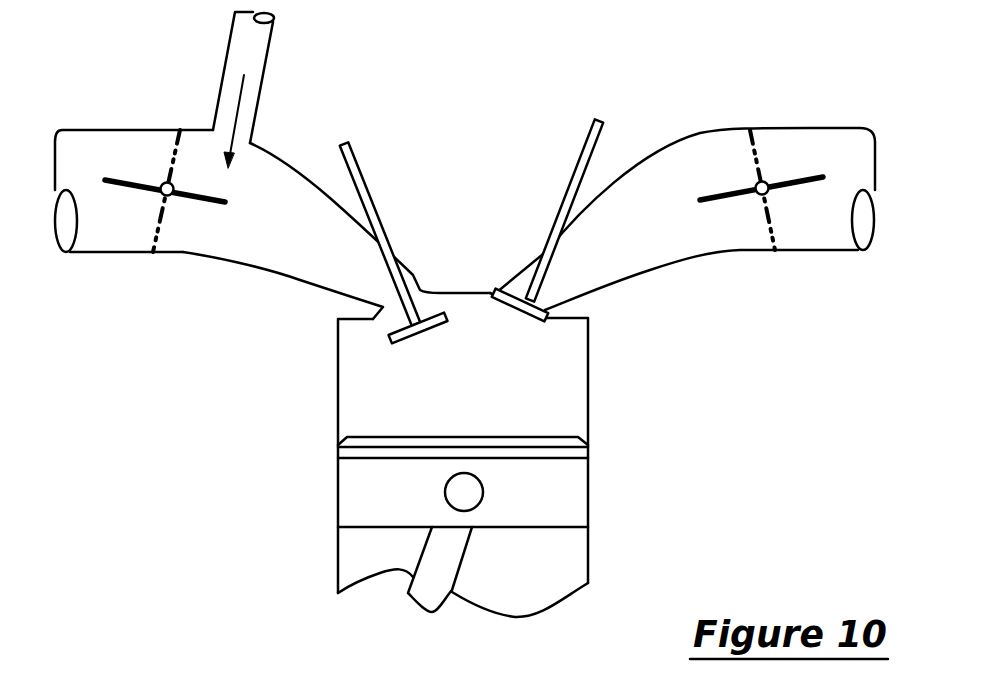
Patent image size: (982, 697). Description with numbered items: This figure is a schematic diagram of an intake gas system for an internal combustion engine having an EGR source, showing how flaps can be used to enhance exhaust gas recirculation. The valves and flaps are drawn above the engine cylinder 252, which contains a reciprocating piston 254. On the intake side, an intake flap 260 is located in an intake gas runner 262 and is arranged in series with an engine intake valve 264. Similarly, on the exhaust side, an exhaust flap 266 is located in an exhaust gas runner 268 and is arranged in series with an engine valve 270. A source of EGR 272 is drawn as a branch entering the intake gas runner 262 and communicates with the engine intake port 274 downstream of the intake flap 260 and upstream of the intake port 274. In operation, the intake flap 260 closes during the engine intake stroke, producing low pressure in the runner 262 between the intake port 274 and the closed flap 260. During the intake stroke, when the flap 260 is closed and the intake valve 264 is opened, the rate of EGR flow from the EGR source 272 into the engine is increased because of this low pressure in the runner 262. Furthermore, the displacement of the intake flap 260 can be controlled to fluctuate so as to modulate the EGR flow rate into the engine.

The engine cylinder 252 is at (588, 370).
The reciprocating piston 254 is at (588, 492).
The intake flap 260 is at (133, 184).
The intake gas runner 262 is at (82, 142).
The engine intake valve 264 is at (361, 177).
The exhaust flap 266 is at (795, 178).
The exhaust gas runner 268 is at (848, 140).
The engine valve 270 is at (570, 178).
The EGR source 272 is at (267, 65).
The engine intake port 274 is at (373, 318).